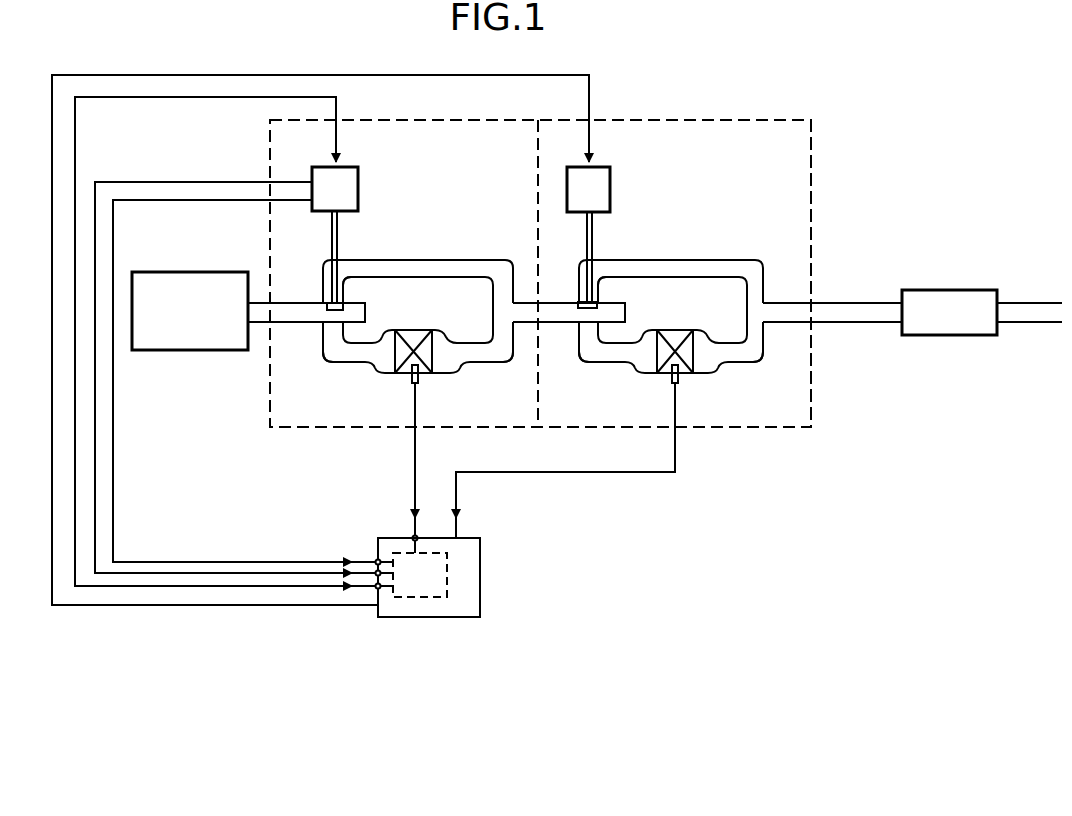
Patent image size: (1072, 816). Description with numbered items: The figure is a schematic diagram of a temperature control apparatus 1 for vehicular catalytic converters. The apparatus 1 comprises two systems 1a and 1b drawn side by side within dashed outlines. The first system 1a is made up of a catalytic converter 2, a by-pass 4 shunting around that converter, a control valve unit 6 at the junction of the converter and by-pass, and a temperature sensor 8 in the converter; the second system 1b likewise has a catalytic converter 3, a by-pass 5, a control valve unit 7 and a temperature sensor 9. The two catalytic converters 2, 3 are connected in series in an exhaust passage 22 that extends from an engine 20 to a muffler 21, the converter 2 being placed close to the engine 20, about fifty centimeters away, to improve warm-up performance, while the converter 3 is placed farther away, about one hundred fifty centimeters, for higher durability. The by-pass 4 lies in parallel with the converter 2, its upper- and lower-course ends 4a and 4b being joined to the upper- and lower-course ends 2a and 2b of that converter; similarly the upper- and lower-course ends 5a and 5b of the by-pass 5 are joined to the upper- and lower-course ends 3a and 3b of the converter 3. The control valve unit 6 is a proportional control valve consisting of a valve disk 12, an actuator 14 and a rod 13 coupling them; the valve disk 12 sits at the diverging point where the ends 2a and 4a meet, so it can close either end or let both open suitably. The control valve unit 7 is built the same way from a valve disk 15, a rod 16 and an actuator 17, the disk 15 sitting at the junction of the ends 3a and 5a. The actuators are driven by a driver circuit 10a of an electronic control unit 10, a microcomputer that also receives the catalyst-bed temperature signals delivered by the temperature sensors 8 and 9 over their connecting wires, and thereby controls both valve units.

The temperature control apparatus 1 is at (609, 109).
The first system 1a is at (270, 166).
The second system 1b is at (812, 216).
The catalytic converter 2 is at (415, 309).
The upper-course end of catalytic converter 2a is at (335, 328).
The lower-course end of catalytic converter 2b is at (503, 327).
The catalytic converter 3 is at (680, 312).
The upper-course end of catalytic converter 3a is at (588, 327).
The lower-course end of catalytic converter 3b is at (760, 323).
The by-pass 4 is at (426, 260).
The upper-course end of by-pass 4a is at (343, 295).
The lower-course end of by-pass 4b is at (503, 295).
The by-pass 5 is at (680, 260).
The upper-course end of by-pass 5a is at (600, 293).
The lower-course end of by-pass 5b is at (758, 293).
The control valve unit 6 is at (343, 250).
The control valve unit 7 is at (603, 250).
The temperature sensor 8 is at (417, 375).
The temperature sensor 9 is at (682, 375).
The electronic control unit 10 is at (320, 367).
The driver circuit 10a is at (440, 598).
The valve disk 12 is at (325, 304).
The rod 13 is at (332, 238).
The actuator 14 is at (312, 172).
The valve disk 15 is at (580, 301).
The rod 16 is at (587, 238).
The actuator 17 is at (611, 193).
The engine 20 is at (180, 272).
The muffler 21 is at (950, 290).
The exhaust passage 22 is at (852, 302).